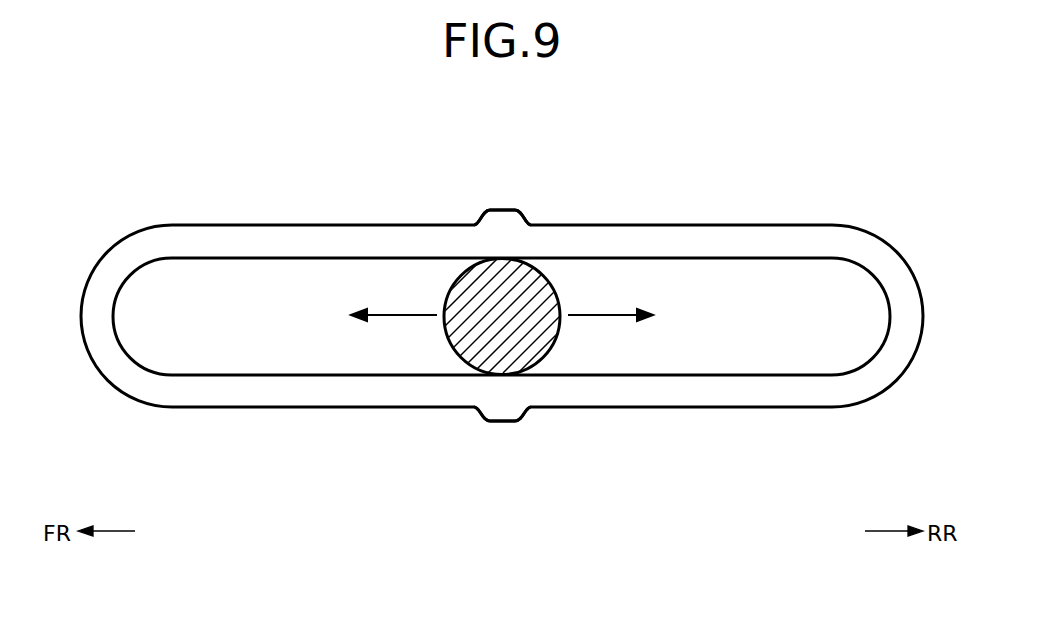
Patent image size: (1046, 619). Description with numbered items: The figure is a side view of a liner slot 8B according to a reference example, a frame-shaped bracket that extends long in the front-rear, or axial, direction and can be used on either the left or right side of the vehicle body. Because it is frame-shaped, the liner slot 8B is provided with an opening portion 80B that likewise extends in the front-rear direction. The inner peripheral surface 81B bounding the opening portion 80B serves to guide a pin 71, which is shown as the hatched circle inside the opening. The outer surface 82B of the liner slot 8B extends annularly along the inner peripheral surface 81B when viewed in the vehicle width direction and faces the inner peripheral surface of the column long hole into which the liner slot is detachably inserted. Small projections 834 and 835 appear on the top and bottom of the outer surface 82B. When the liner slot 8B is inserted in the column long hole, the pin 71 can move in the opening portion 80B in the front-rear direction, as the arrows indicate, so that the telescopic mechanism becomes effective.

The liner slot 8B is at (502, 301).
The outer surface 82B is at (722, 224).
The inner peripheral surface 81B is at (262, 374).
The opening portion 80B is at (756, 331).
The upper protrusion 834 is at (501, 218).
The lower protrusion 835 is at (500, 421).
The pin 71 is at (518, 332).